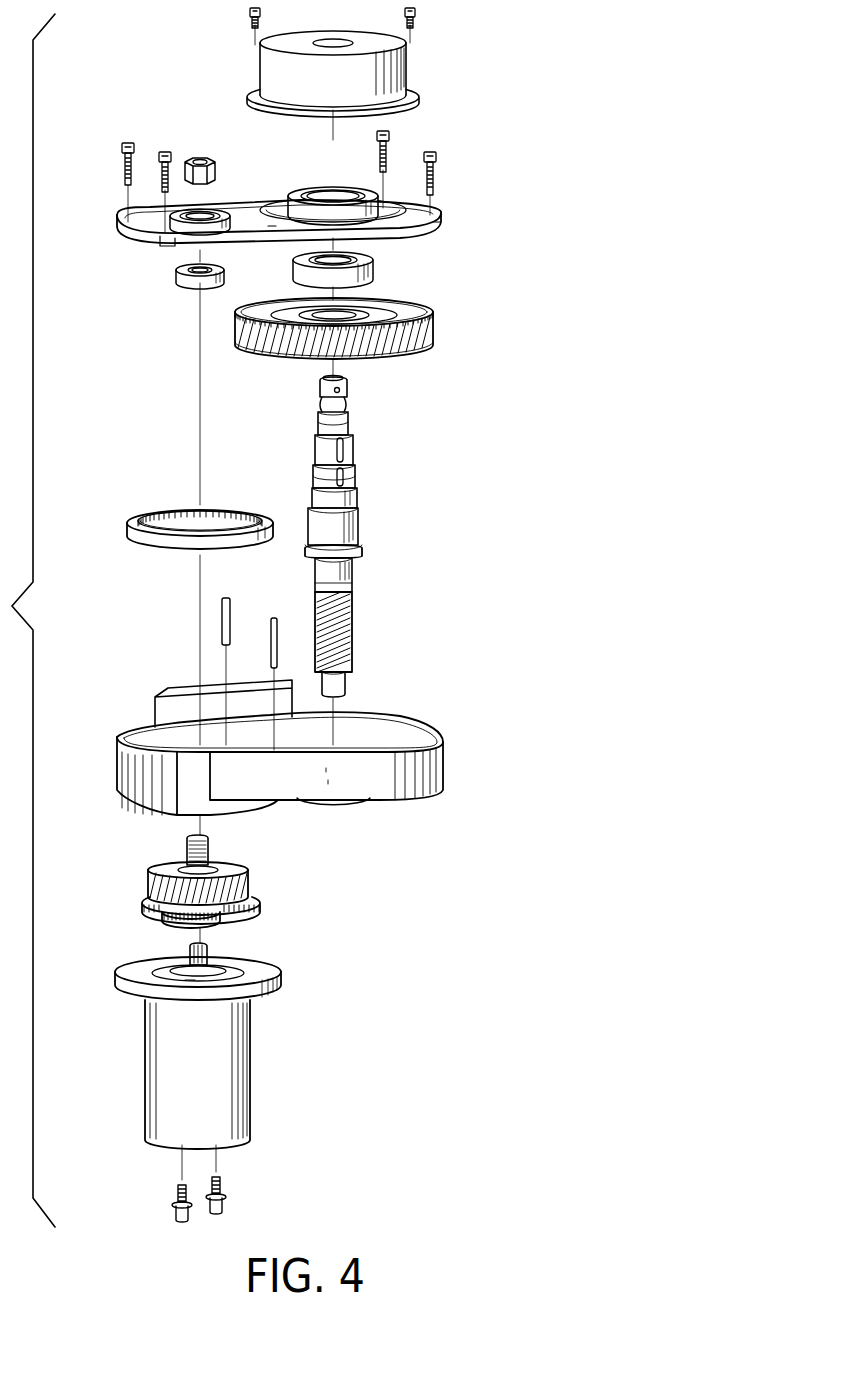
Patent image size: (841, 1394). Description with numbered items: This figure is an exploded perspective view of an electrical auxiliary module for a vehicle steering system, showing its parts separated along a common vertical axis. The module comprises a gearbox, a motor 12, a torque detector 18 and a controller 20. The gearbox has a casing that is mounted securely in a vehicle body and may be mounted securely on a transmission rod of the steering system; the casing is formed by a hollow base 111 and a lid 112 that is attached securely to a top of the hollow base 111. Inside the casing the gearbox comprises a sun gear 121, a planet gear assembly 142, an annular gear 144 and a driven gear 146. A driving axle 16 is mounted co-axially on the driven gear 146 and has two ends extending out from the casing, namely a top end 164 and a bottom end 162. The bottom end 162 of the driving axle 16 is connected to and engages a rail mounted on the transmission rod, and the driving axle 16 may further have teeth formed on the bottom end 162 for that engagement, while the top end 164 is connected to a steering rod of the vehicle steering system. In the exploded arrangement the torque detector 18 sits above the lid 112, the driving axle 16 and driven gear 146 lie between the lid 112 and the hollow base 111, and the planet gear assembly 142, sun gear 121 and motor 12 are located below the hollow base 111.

The motor 12 is at (235, 1070).
The driving axle 16 is at (377, 537).
The torque detector 18 is at (272, 78).
The controller 20 is at (162, 717).
The hollow base 111 is at (403, 778).
The lid 112 is at (442, 217).
The sun gear 121 is at (208, 955).
The planet gear assembly 142 is at (265, 861).
The annular gear 144 is at (162, 540).
The driven gear 146 is at (410, 320).
The bottom end 162 is at (345, 627).
The top end 164 is at (340, 430).